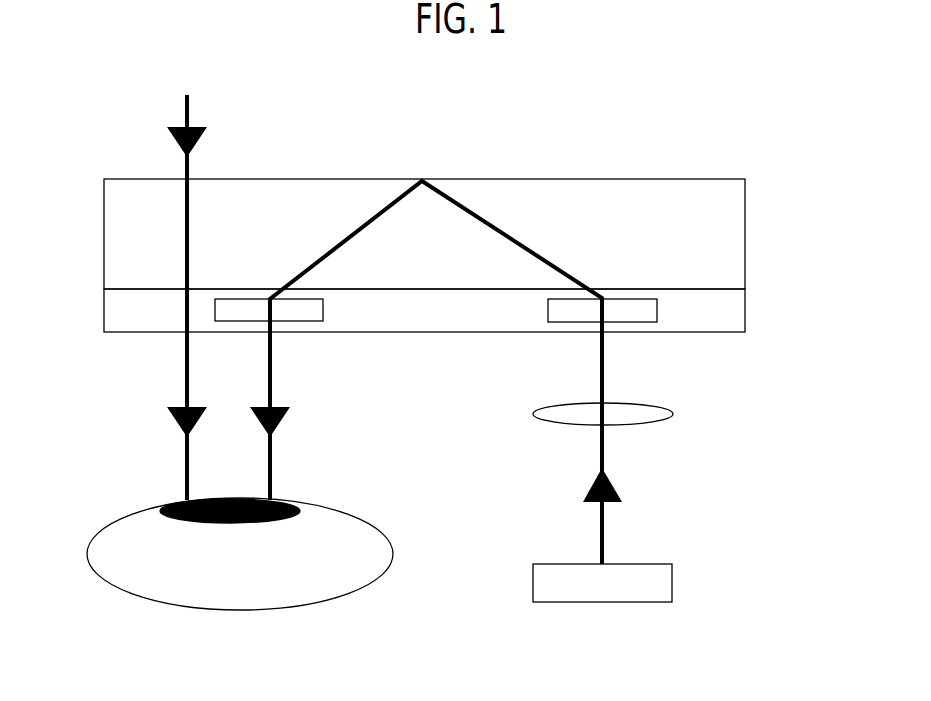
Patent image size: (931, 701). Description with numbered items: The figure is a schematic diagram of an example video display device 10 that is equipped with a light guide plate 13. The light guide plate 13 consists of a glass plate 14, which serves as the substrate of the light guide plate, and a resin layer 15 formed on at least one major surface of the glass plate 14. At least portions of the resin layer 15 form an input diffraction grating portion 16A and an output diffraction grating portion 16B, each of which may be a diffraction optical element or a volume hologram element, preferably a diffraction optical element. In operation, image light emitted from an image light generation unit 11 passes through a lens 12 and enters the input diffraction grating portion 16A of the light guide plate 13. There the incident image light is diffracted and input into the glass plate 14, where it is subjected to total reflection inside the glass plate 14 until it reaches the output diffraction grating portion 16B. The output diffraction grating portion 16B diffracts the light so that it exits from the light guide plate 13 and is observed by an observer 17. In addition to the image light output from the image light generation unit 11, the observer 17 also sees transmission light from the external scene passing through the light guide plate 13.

The video display device 10 is at (475, 603).
The image light generation unit 11 is at (672, 580).
The lens 12 is at (673, 414).
The light guide plate 13 is at (90, 179).
The glass plate 14 is at (745, 230).
The resin layer 15 is at (745, 312).
The input diffraction grating portion 16A is at (640, 322).
The output diffraction grating portion 16B is at (323, 321).
The observer 17 is at (225, 610).